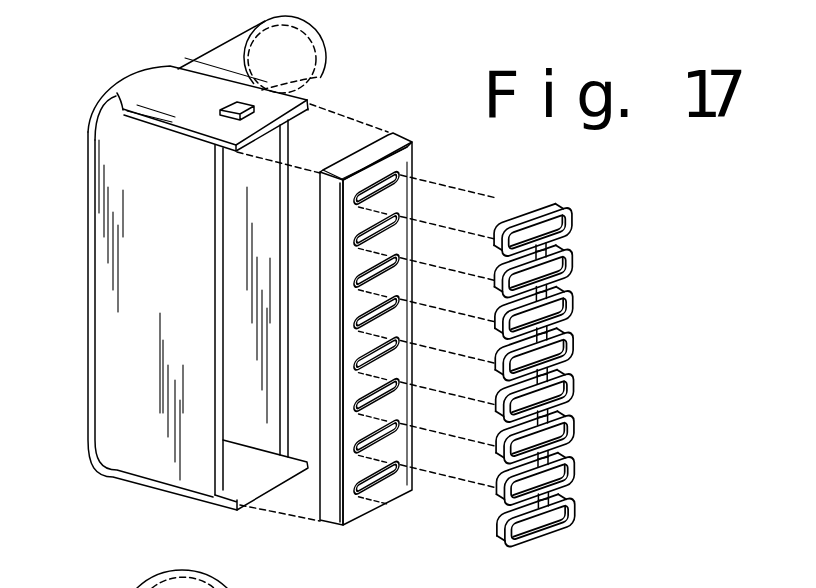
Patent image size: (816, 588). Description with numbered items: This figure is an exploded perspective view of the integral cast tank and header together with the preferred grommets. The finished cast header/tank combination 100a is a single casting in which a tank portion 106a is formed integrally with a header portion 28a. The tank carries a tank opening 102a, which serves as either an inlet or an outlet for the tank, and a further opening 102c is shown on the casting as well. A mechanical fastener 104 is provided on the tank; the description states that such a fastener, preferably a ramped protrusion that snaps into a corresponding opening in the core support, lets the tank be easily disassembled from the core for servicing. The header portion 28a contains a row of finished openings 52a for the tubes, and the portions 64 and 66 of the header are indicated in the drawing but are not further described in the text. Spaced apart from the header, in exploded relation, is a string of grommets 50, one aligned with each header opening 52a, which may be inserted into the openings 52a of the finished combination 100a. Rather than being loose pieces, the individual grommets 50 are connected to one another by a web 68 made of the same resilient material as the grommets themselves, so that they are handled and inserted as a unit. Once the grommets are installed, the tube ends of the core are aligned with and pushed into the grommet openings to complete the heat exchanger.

The cast tank / integral header-tank combination 100a is at (212, 302).
The tank opening 102a is at (316, 33).
The tank opening 102c is at (173, 572).
The mechanical fastener 104 is at (257, 107).
The tank portion 106a is at (118, 372).
The integral header portion 28a is at (400, 356).
The side wall of insert 64 is at (330, 482).
The top wall of insert 66 is at (402, 133).
The finished openings 52a is at (404, 189).
The grommets 50 is at (588, 366).
The web 68 is at (570, 282).